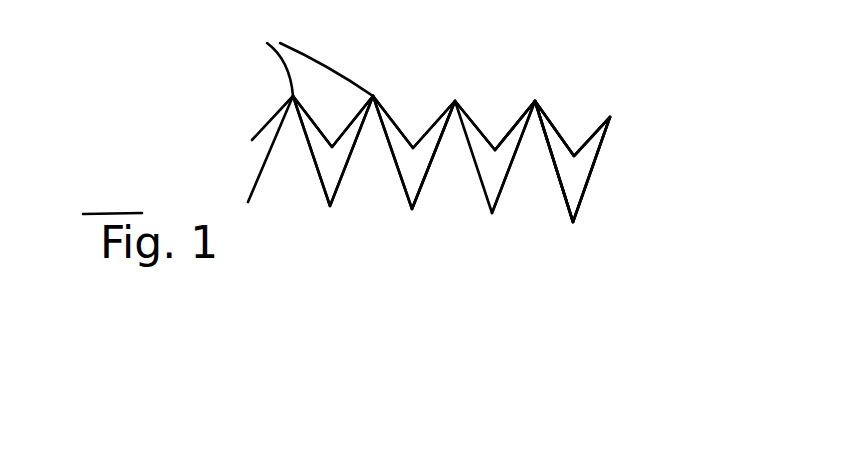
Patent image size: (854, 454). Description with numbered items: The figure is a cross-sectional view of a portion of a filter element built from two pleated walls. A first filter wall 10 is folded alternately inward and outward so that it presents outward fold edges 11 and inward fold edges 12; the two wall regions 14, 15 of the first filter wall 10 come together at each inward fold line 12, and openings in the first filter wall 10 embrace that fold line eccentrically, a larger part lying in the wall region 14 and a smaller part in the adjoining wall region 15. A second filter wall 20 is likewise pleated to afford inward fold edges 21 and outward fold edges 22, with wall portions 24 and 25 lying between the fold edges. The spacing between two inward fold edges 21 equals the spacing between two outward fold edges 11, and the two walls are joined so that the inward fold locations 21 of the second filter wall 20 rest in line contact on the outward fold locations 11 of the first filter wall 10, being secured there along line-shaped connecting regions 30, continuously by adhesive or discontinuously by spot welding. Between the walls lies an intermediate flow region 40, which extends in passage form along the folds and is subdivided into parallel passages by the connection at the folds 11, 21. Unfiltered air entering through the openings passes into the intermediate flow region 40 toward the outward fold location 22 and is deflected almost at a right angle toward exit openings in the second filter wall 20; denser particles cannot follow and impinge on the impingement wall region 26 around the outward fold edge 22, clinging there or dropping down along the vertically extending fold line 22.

The first filter wall 10 is at (406, 114).
The outward fold edges 11 is at (538, 95).
The inward fold edges 12 is at (573, 146).
The wall region 14 is at (410, 137).
The wall region 15 is at (350, 131).
The second filter wall 20 is at (436, 189).
The inward fold edges 21 is at (535, 123).
The outward fold edges 22 is at (573, 223).
The wall portion 24 is at (400, 168).
The wall portion 25 is at (348, 175).
The impingement wall region 26 is at (569, 187).
The line-shaped connecting regions 30 is at (297, 52).
The intermediate flow region 40 is at (492, 169).